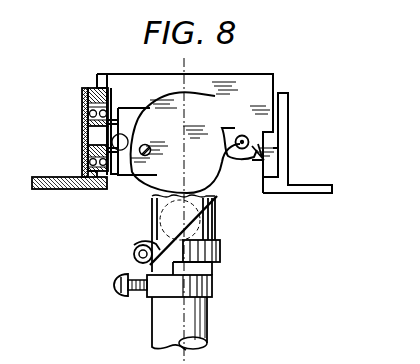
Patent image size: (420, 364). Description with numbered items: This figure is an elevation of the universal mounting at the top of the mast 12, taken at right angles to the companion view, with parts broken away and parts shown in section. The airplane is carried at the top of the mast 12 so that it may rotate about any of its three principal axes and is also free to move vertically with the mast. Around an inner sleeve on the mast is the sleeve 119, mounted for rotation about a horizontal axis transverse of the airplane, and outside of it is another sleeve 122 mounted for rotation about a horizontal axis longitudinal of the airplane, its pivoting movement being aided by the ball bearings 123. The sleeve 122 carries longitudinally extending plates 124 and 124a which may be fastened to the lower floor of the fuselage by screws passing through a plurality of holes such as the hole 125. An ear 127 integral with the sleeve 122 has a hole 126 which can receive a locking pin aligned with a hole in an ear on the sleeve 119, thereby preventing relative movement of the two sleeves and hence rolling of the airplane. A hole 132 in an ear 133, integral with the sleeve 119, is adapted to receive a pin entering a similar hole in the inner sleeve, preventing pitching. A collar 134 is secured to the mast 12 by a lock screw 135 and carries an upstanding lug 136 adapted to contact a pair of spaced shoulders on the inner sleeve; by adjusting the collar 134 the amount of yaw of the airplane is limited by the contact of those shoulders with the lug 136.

The mast 12 is at (210, 318).
The sleeve 119 is at (147, 177).
The sleeve 122 is at (82, 124).
The ball bearings 123 is at (82, 160).
The plate 124 is at (72, 191).
The plate 124a is at (310, 194).
The hole 125 is at (50, 189).
The hole 126 is at (248, 134).
The ear 127 is at (260, 152).
The hole 132 is at (134, 256).
The ear 133 is at (140, 245).
The collar 134 is at (217, 291).
The lock screw 135 is at (138, 292).
The lug 136 is at (220, 264).